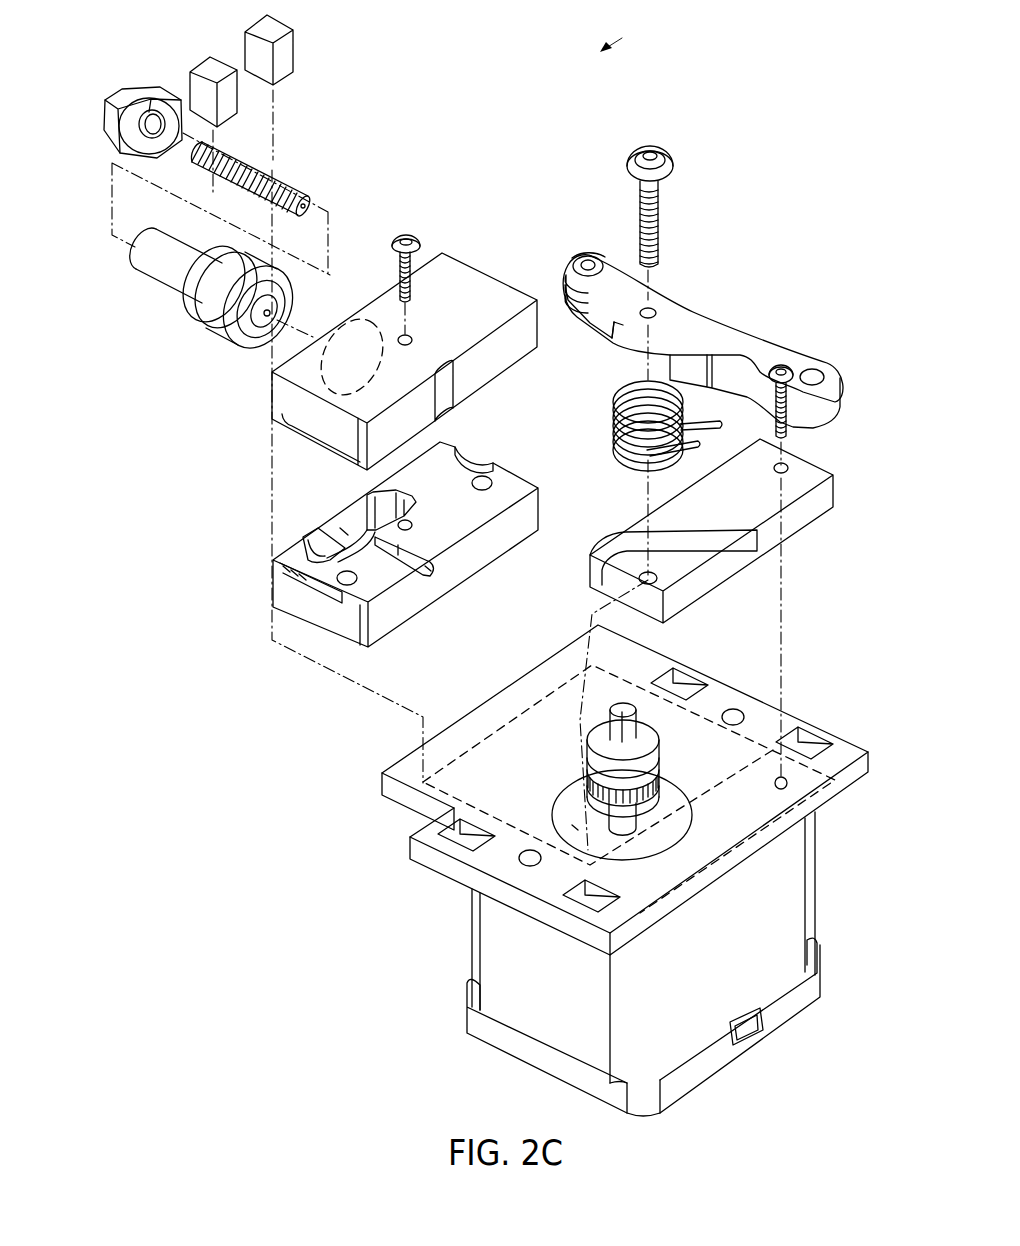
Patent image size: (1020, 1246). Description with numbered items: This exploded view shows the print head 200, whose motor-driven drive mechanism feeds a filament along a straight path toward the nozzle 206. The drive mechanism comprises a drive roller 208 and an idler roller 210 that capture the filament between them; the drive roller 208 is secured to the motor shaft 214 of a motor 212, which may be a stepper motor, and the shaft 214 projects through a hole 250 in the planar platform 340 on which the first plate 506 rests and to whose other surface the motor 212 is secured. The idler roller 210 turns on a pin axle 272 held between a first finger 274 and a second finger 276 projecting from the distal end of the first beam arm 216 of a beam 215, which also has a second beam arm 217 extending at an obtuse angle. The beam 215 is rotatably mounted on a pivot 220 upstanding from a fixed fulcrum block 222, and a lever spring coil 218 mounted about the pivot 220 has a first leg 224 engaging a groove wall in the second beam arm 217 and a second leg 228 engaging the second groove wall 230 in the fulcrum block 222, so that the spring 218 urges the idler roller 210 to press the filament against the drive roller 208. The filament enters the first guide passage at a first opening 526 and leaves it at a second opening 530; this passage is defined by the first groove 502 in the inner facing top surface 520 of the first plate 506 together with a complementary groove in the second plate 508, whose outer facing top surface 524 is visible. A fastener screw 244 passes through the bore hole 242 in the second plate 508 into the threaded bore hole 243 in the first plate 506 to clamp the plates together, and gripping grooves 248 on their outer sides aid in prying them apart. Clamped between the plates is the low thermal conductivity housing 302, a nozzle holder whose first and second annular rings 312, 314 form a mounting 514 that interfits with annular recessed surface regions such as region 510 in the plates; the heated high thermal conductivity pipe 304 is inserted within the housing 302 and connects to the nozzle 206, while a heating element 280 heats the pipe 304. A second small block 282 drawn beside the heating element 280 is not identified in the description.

The print head 200 is at (628, 34).
The nozzle 206 is at (106, 116).
The drive roller 208 is at (660, 738).
The idler roller 210 is at (680, 292).
The motor 212 is at (474, 956).
The motor shaft 214 is at (640, 822).
The beam 215 is at (733, 318).
The first beam arm 216 is at (603, 330).
The second beam arm 217 is at (800, 368).
The lever spring coil 218 is at (639, 434).
The pivot 220 is at (660, 205).
The fulcrum block 222 is at (728, 531).
The first leg 224 is at (700, 423).
The second leg 228 is at (697, 452).
The second groove wall 230 is at (760, 553).
The bore hole 242 is at (411, 337).
The threaded bore hole 243 is at (412, 524).
The fastener screw 244 is at (397, 264).
The gripping grooves 248 is at (491, 470).
The hole 250 is at (578, 825).
The pin axle 272 is at (580, 255).
The first finger 274 is at (595, 258).
The second finger 276 is at (584, 322).
The heating element 280 is at (188, 70).
The block 282 is at (298, 26).
The housing 302 is at (185, 302).
The pipe 304 is at (303, 186).
The first annular ring 312 is at (234, 349).
The second annular ring 314 is at (197, 313).
The motor mounting plate 340 is at (593, 790).
The first groove 502 is at (436, 548).
The first plate 506 is at (372, 543).
The second plate 508 is at (374, 348).
The annular recessed surface region 510 is at (360, 532).
The mounting 514 is at (330, 530).
The inner facing top surface 520 is at (463, 468).
The outer facing top surface 524 is at (445, 256).
The first opening 526 is at (435, 594).
The second opening 530 is at (365, 540).